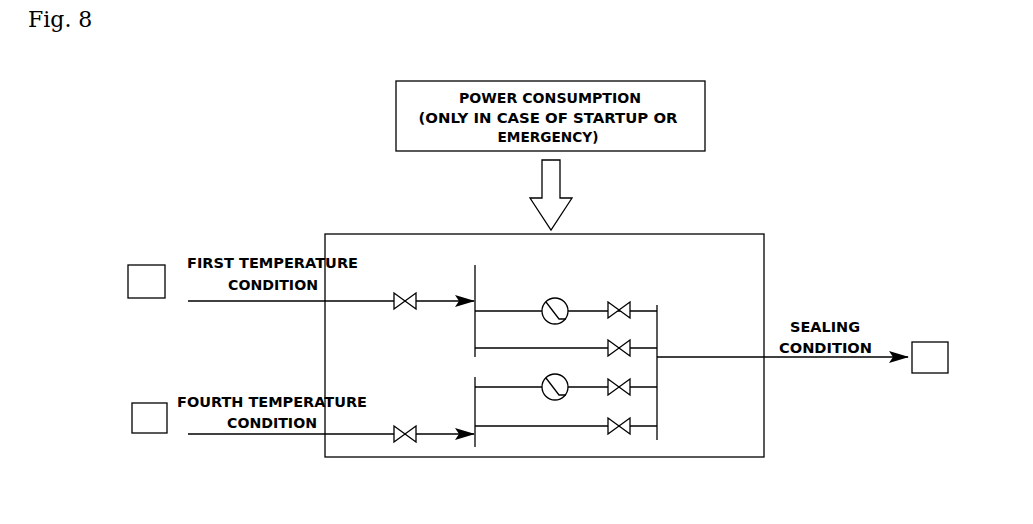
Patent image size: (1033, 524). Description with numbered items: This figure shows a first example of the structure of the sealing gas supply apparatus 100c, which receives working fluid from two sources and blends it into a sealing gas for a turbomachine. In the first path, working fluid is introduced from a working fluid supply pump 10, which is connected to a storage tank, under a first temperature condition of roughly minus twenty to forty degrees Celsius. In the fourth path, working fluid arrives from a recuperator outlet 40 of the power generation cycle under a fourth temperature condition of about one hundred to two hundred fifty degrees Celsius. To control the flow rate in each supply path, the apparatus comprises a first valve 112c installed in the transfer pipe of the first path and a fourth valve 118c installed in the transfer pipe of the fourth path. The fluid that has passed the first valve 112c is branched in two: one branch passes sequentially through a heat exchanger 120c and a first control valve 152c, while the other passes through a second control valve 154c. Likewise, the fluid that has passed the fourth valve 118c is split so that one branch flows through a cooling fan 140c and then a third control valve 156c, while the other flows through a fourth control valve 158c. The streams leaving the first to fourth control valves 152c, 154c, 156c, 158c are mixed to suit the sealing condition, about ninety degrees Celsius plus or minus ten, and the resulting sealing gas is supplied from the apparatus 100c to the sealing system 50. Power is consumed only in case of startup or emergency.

The working fluid supply pump 10 is at (146, 281).
The recuperator outlet 40 is at (149, 418).
The sealing system 50 is at (930, 357).
The sealing gas supply apparatus 100c is at (752, 265).
The first valve 112c is at (409, 290).
The fourth valve 118c is at (407, 423).
The heat exchanger 120c is at (556, 299).
The cooling fan 140c is at (556, 379).
The first control valve 152c is at (618, 302).
The second control valve 154c is at (619, 340).
The third control valve 156c is at (620, 380).
The fourth control valve 158c is at (620, 417).